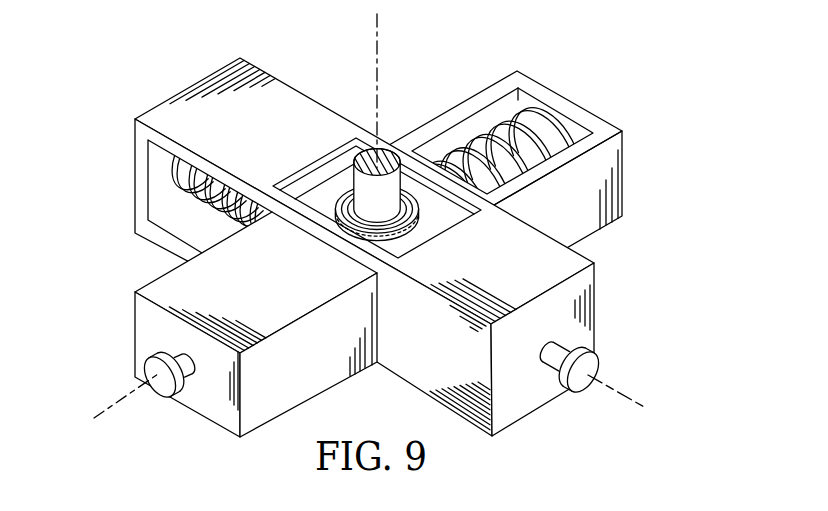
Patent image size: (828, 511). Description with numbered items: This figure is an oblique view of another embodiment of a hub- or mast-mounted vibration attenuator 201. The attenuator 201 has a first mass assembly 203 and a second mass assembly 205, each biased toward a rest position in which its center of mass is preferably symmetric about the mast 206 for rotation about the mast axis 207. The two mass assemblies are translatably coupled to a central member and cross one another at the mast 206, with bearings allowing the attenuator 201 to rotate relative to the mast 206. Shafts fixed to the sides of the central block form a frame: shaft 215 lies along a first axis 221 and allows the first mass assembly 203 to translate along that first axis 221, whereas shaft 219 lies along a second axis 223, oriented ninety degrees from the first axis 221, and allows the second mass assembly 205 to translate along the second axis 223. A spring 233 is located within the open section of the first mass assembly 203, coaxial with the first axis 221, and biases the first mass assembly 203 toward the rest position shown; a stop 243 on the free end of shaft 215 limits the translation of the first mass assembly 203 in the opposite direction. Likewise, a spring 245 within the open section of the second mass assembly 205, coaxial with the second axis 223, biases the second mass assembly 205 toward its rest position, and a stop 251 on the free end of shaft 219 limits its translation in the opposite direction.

The vibration attenuator 201 is at (554, 66).
The first mass assembly 203 is at (608, 285).
The second mass assembly 205 is at (214, 440).
The mast 206 is at (378, 146).
The mast axis 207 is at (379, 31).
The shaft 215 is at (589, 340).
The shaft 219 is at (152, 357).
The first axis 221 is at (636, 409).
The second axis 223 is at (97, 412).
The spring 233 is at (172, 186).
The stop 243 is at (575, 390).
The spring 245 is at (585, 124).
The stop 251 is at (163, 398).